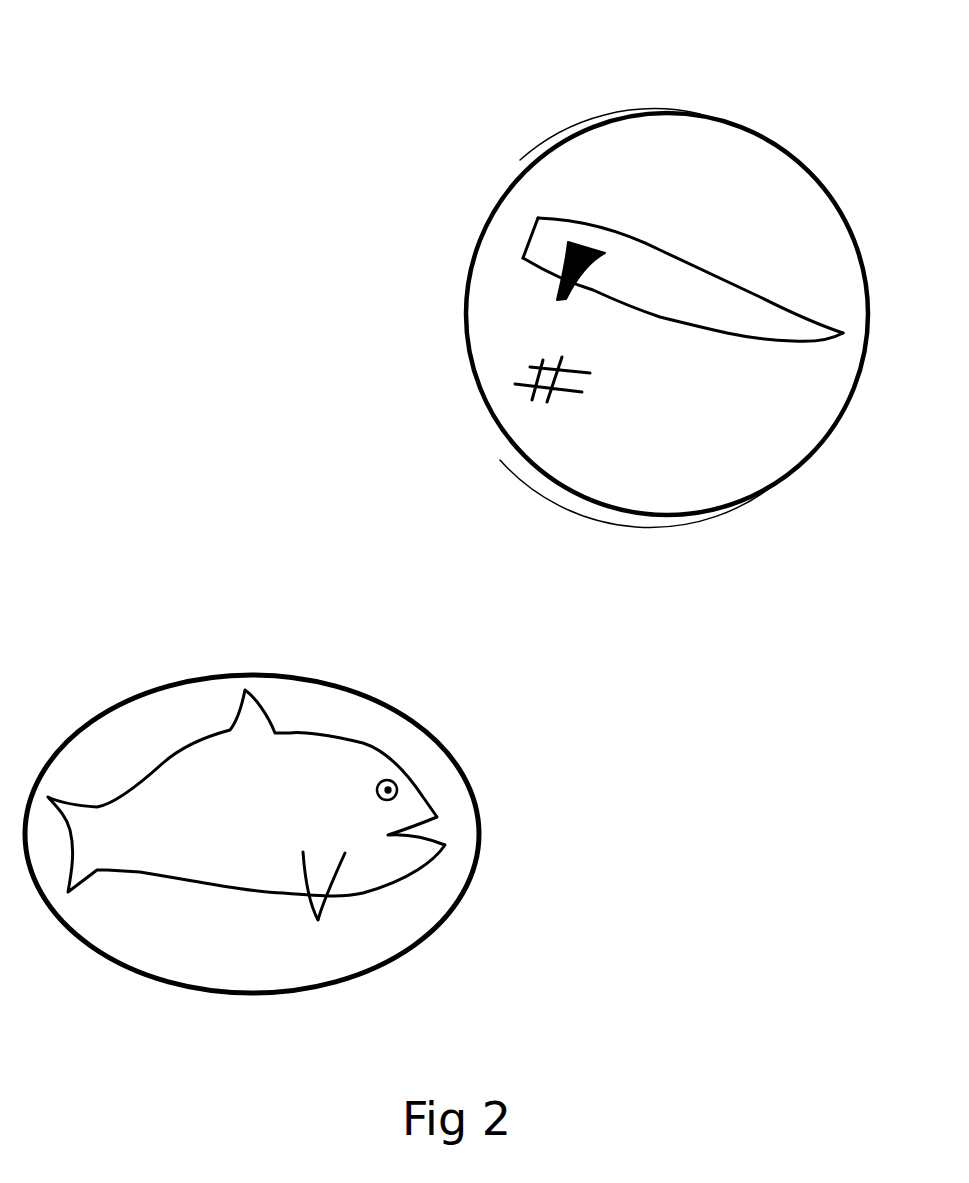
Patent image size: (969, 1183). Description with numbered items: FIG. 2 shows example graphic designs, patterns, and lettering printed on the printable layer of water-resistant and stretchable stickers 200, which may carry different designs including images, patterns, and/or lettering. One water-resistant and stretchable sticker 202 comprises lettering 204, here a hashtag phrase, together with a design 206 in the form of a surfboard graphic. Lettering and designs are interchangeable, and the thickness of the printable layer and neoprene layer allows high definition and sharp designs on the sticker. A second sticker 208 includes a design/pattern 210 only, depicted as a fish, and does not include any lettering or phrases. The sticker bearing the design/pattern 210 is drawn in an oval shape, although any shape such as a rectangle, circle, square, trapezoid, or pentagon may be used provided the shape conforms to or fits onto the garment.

The water-resistant and stretchable stickers 200 is at (450, 62).
The water-resistant and stretchable sticker 202 is at (667, 341).
The lettering 204 is at (628, 407).
The design 206 is at (683, 275).
The sticker 208 is at (252, 863).
The design/pattern 210 is at (246, 810).